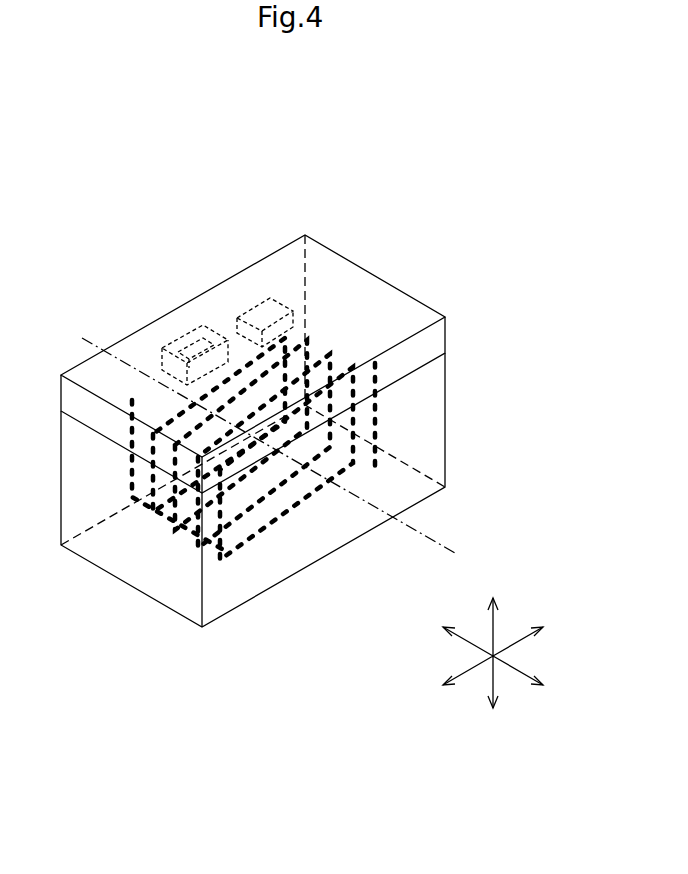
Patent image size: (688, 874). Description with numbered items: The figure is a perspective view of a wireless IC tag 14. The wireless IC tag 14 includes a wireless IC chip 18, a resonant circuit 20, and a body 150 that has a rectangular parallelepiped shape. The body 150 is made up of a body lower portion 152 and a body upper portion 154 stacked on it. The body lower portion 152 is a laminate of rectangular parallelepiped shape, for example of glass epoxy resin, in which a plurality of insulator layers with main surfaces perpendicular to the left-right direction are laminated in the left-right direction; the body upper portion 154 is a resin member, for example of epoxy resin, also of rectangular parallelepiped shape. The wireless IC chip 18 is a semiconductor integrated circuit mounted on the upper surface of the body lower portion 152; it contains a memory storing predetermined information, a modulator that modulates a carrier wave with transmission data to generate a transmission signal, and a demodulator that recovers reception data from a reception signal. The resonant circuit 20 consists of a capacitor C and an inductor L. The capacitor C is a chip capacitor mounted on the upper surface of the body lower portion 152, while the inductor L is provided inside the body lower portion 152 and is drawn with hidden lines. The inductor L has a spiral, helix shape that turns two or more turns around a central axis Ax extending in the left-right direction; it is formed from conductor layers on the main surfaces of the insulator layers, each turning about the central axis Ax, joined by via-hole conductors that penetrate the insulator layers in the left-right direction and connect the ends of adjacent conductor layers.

The wireless IC tag 14 is at (143, 167).
The wireless IC chip 18 is at (183, 330).
The resonant circuit 20 is at (432, 212).
The body 150 is at (543, 318).
The body lower portion 152 is at (445, 396).
The body upper portion 154 is at (445, 336).
The capacitor C is at (305, 347).
The inductor L is at (347, 337).
The central axis Ax is at (251, 437).